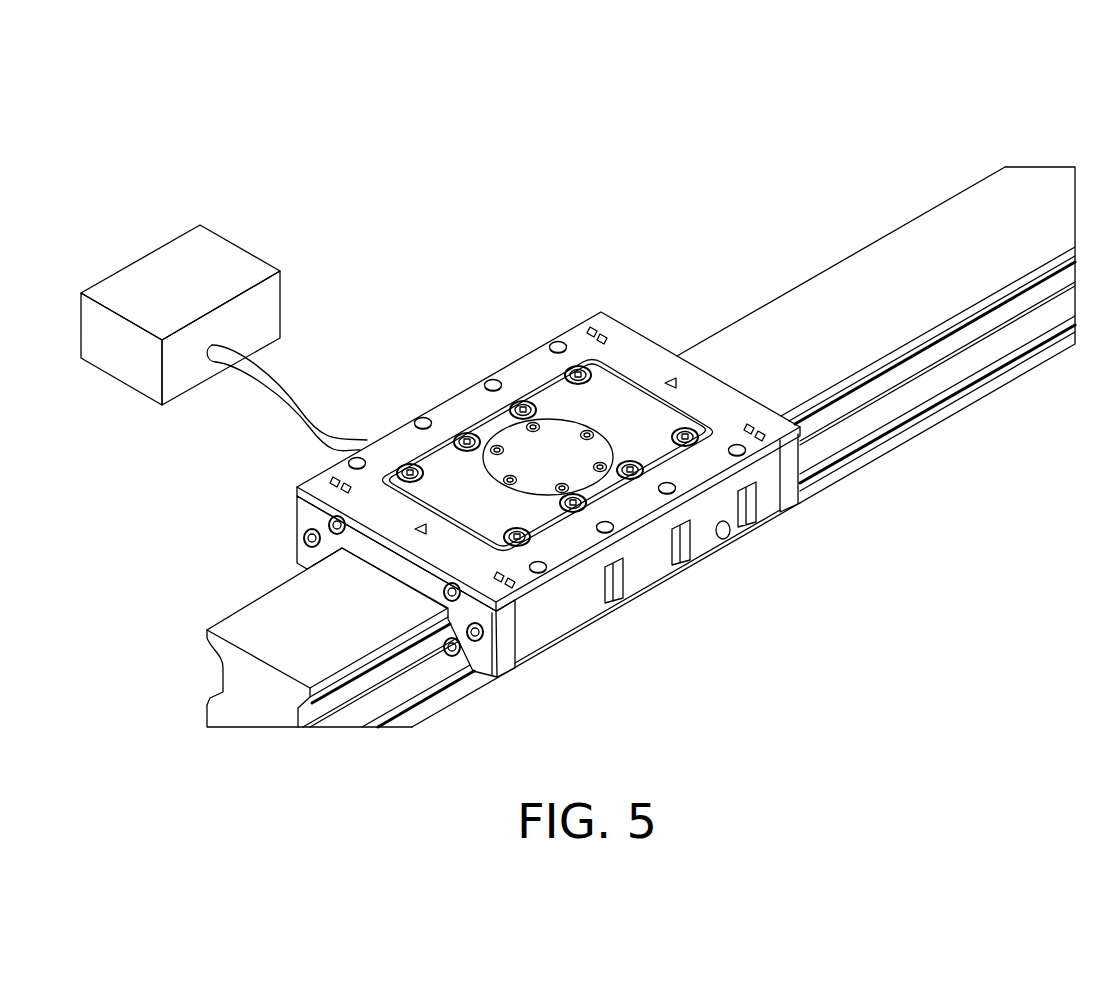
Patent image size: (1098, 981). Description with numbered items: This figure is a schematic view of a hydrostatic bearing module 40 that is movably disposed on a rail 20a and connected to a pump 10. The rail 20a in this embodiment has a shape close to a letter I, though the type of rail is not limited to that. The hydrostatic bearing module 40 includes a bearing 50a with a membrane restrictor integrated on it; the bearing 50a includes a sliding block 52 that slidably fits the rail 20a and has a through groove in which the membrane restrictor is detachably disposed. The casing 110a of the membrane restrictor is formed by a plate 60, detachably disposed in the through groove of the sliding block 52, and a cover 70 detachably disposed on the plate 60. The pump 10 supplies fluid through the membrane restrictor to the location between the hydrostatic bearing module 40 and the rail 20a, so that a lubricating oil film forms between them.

The pump 10 is at (157, 267).
The hydrostatic bearing module 40 is at (290, 205).
The rail 20a is at (813, 295).
The bearing 50a is at (400, 447).
The sliding block 52 is at (400, 447).
The plate 60 is at (447, 467).
The cover 70 is at (555, 445).
The casing 110a is at (420, 246).